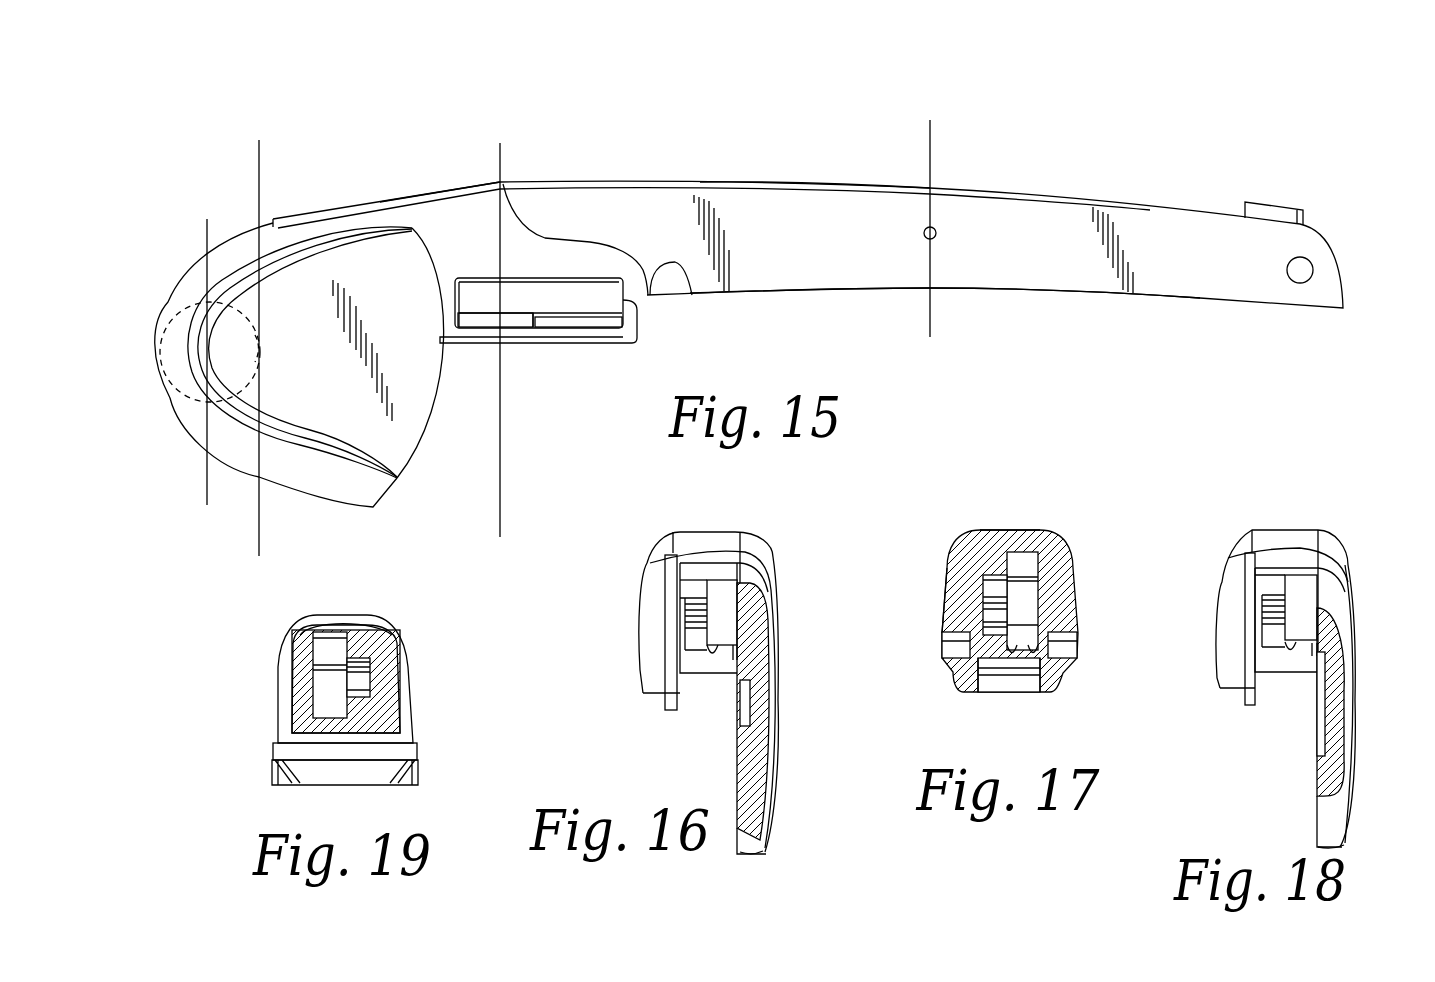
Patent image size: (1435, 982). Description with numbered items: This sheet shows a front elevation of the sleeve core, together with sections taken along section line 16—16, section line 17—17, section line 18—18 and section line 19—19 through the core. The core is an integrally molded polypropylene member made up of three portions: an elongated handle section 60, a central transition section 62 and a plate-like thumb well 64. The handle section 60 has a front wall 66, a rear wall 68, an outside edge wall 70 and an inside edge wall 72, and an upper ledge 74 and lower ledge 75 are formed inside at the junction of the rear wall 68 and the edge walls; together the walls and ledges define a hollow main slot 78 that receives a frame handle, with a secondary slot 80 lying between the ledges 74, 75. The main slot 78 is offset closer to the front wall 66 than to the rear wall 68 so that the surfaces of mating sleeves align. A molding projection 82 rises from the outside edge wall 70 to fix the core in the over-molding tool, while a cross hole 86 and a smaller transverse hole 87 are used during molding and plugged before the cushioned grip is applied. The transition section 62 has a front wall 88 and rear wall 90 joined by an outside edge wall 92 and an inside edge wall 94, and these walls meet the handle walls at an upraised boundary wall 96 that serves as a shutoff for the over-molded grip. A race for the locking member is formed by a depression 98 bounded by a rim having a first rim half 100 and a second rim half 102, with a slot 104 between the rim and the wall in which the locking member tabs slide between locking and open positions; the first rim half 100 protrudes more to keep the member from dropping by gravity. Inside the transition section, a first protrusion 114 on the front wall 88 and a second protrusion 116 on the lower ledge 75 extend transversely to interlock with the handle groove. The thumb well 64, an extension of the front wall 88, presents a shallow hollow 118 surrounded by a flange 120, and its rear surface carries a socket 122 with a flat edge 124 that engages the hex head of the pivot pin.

In FIG. 15, the section line 16— 16 is at (256, 169).
In FIG. 15, the section line 17— 17 is at (497, 151).
In FIG. 15, the section line 18— 18 is at (204, 231).
In FIG. 15, the section line 19— 19 is at (936, 133).
In FIG. 15, the handle section 60 is at (1073, 195).
In FIG. 15, the transition section 62 is at (343, 202).
In FIG. 15, the thumb well 64 is at (164, 310).
In FIG. 16, the thumb well 64 is at (768, 848).
In FIG. 18, the thumb well 64 is at (1348, 850).
In FIG. 15, the front wall 66 is at (985, 261).
In FIG. 19, the front wall 66 is at (280, 665).
In FIG. 19, the rear wall 68 is at (403, 653).
In FIG. 15, the outside edge wall 70 is at (753, 182).
In FIG. 19, the outside edge wall 70 is at (330, 617).
In FIG. 15, the inside edge wall 72 is at (848, 291).
In FIG. 19, the inside edge wall 72 is at (325, 773).
In FIG. 19, the upper ledge 74 is at (383, 622).
In FIG. 16, the upper ledge 74 is at (692, 582).
In FIG. 17, the upper ledge 74 is at (1010, 567).
In FIG. 19, the lower ledge 75 is at (353, 703).
In FIG. 16, the lower ledge 75 is at (692, 662).
In FIG. 17, the lower ledge 75 is at (970, 662).
In FIG. 18, the lower ledge 75 is at (1269, 659).
In FIG. 19, the main slot 78 is at (327, 703).
In FIG. 16, the main slot 78 is at (724, 598).
In FIG. 17, the main slot 78 is at (1023, 595).
In FIG. 18, the main slot 78 is at (1301, 588).
In FIG. 19, the secondary slot 80 is at (370, 677).
In FIG. 17, the secondary slot 80 is at (1003, 608).
In FIG. 15, the molding projection 82 is at (1307, 215).
In FIG. 15, the cross hole 86 is at (1303, 268).
In FIG. 15, the transverse hole 87 is at (924, 233).
In FIG. 15, the front wall 88 is at (439, 244).
In FIG. 16, the front wall 88 is at (761, 560).
In FIG. 17, the front wall 88 is at (1073, 603).
In FIG. 18, the front wall 88 is at (1349, 564).
In FIG. 16, the rear wall 90 is at (640, 634).
In FIG. 17, the rear wall 90 is at (945, 577).
In FIG. 18, the rear wall 90 is at (1223, 566).
In FIG. 15, the outside edge wall 92 is at (459, 179).
In FIG. 16, the outside edge wall 92 is at (707, 532).
In FIG. 17, the outside edge wall 92 is at (1017, 530).
In FIG. 18, the outside edge wall 92 is at (1278, 538).
In FIG. 15, the inside edge wall 94 is at (555, 344).
In FIG. 15, the boundary wall 96 is at (665, 268).
In FIG. 15, the depression 98 is at (573, 290).
In FIG. 17, the depression 98 is at (967, 645).
In FIG. 15, the first rim half 100 is at (590, 319).
In FIG. 15, the second rim half 102 is at (480, 322).
In FIG. 15, the slot 104 is at (518, 300).
In FIG. 16, the first protrusion 114 is at (728, 655).
In FIG. 17, the first protrusion 114 is at (1031, 660).
In FIG. 18, the first protrusion 114 is at (1310, 660).
In FIG. 16, the second protrusion 116 is at (715, 657).
In FIG. 17, the second protrusion 116 is at (1013, 655).
In FIG. 18, the second protrusion 116 is at (1293, 655).
In FIG. 15, the hollow 118 is at (296, 420).
In FIG. 16, the hollow 118 is at (765, 757).
In FIG. 18, the hollow 118 is at (1340, 732).
In FIG. 15, the flange 120 is at (317, 462).
In FIG. 16, the flange 120 is at (770, 799).
In FIG. 18, the flange 120 is at (1342, 783).
In FIG. 15, the socket 122 is at (260, 350).
In FIG. 16, the socket 122 is at (744, 719).
In FIG. 18, the socket 122 is at (1325, 690).
In FIG. 15, the flat edge 124 is at (167, 397).